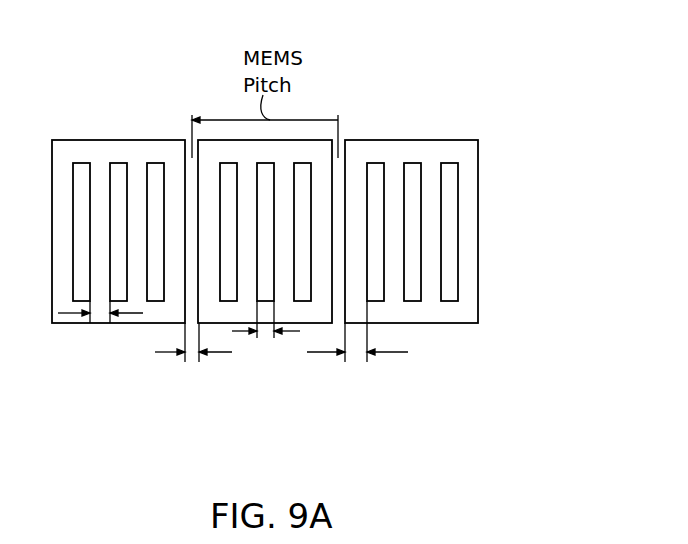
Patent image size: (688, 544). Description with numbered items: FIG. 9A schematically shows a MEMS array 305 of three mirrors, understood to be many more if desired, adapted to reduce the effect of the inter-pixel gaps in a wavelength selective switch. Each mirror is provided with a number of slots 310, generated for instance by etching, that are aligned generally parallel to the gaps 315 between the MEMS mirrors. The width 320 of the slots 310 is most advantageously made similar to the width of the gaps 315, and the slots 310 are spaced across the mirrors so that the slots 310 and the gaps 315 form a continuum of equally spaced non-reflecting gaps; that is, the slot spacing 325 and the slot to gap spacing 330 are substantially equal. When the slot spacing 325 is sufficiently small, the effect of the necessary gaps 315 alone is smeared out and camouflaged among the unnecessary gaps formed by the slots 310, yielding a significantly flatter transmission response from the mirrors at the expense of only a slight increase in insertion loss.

The MEMS array 305 is at (321, 170).
The slots 310 is at (455, 273).
The gaps 315 is at (193, 350).
The width of the slots 320 is at (265, 333).
The slot spacing 325 is at (102, 315).
The slot to gap spacing 330 is at (355, 357).